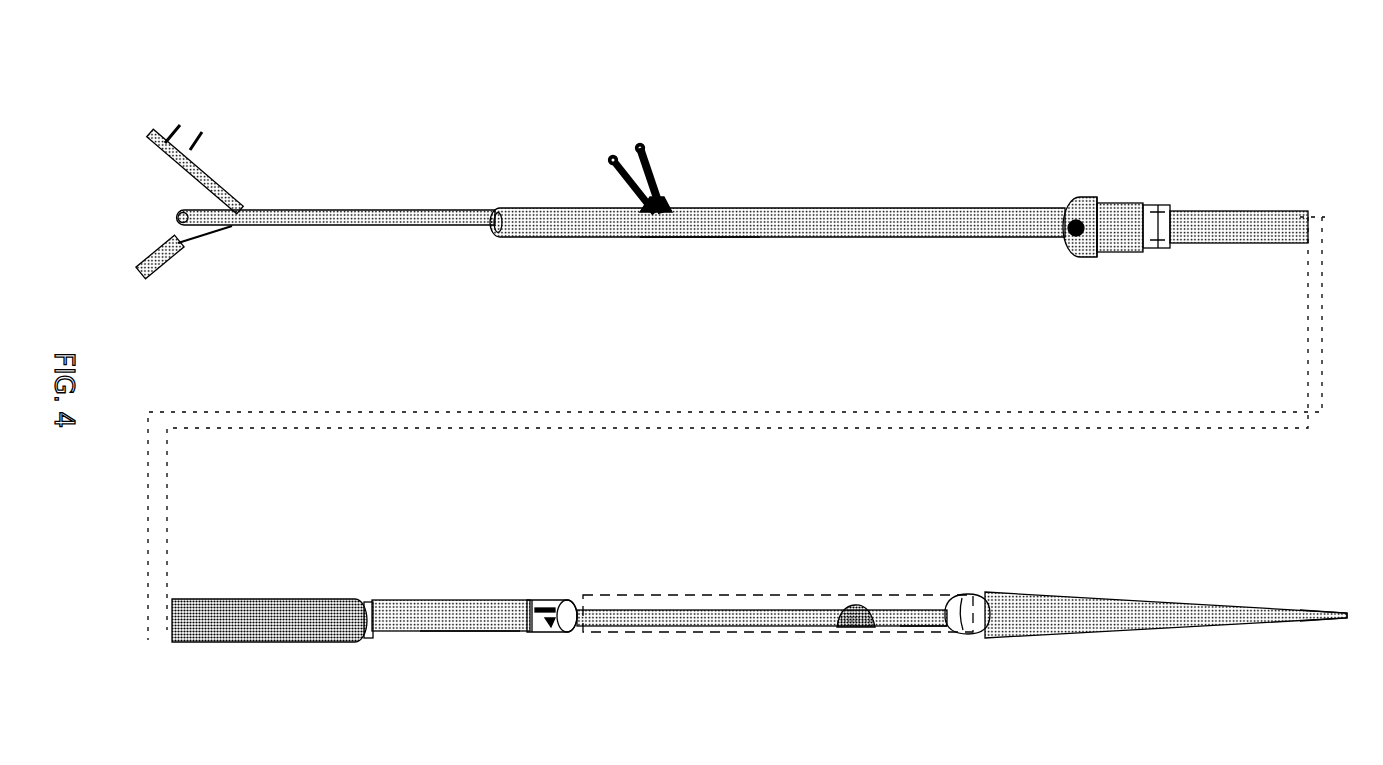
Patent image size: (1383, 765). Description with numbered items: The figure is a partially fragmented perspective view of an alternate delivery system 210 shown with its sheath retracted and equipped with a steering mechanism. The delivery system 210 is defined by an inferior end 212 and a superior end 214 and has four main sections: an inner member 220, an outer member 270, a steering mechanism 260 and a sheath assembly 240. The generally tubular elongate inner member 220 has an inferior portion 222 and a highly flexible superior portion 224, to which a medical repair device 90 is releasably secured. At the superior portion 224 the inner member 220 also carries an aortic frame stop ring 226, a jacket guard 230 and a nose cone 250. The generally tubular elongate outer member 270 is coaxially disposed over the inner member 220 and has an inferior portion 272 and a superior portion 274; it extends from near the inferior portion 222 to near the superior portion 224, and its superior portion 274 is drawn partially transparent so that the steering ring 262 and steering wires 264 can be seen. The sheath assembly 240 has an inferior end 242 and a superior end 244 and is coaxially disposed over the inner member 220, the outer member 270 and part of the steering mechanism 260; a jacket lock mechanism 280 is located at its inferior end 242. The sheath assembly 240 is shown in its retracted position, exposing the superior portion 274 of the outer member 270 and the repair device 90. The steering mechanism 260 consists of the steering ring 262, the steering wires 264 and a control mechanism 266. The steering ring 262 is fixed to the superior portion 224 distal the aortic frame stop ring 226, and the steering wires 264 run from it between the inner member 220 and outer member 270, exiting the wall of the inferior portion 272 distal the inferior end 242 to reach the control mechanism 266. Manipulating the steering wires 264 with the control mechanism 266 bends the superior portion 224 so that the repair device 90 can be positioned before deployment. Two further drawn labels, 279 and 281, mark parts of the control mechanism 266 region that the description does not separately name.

The delivery system 210 is at (800, 107).
The inferior end 212 is at (160, 203).
The superior end 214 is at (1350, 623).
The inner member 220 is at (343, 210).
The inferior portion 222 is at (240, 207).
The superior portion 224 is at (933, 633).
The aortic frame stop ring 226 is at (850, 607).
The jacket guard 230 is at (960, 600).
The sheath assembly 240 is at (1207, 208).
The inferior end 242 is at (1147, 250).
The superior end 244 is at (360, 597).
The nose cone 250 is at (1043, 600).
The steering mechanism 260 is at (655, 140).
The steering ring 262 is at (553, 633).
The steering wires 264 is at (540, 600).
The control mechanism 266 is at (657, 172).
The outer member 270 is at (820, 210).
The inferior portion 272 is at (710, 235).
The superior portion 274 is at (470, 631).
The side arm 279 is at (608, 160).
The side arm end 281 is at (637, 147).
The jacket lock mechanism 280 is at (1127, 203).
The medical repair device 90 is at (693, 633).